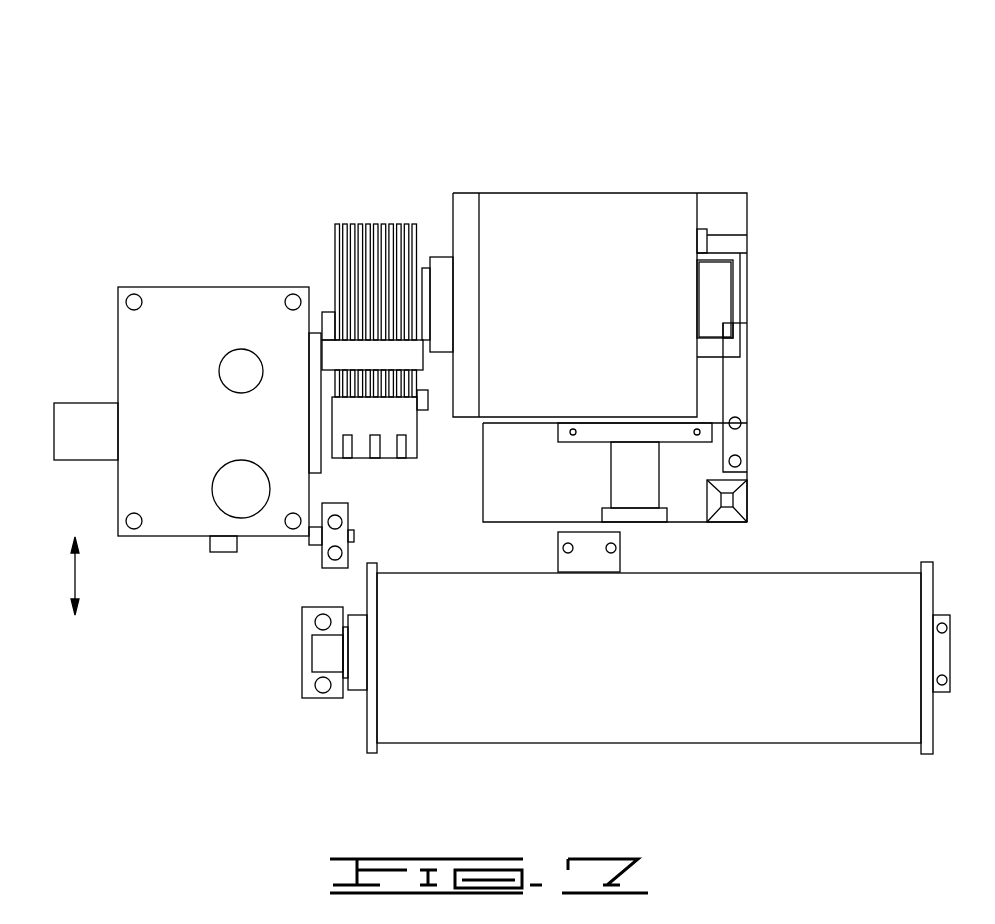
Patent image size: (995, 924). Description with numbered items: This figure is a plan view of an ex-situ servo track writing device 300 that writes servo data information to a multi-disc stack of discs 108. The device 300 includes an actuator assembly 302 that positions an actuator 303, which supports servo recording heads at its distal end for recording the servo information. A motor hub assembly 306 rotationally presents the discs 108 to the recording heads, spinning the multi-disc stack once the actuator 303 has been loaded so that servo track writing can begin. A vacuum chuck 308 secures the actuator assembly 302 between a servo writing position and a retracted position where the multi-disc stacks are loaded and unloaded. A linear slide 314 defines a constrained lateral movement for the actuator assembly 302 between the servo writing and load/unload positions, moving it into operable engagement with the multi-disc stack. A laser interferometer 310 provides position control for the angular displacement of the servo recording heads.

The ex-situ servo track writing device 300 is at (720, 98).
The actuator assembly 302 is at (182, 313).
The actuator 303 is at (385, 460).
The motor hub assembly 306 is at (580, 220).
The vacuum chuck 308 is at (762, 738).
The laser interferometer 310 is at (322, 557).
The linear slide 314 is at (222, 552).
The discs 108 is at (363, 225).